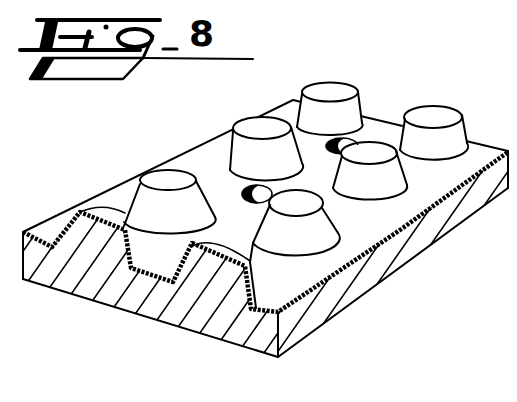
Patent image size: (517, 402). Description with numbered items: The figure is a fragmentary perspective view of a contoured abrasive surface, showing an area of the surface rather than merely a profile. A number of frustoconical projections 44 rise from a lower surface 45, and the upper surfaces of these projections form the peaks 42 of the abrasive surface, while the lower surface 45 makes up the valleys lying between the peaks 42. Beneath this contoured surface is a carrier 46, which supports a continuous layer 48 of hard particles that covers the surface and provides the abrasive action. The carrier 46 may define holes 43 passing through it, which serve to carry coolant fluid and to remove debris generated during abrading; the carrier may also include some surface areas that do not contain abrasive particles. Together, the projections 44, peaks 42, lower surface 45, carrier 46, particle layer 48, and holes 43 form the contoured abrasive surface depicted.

The peaks 42 is at (173, 185).
The holes 43 is at (243, 192).
The frustoconical projections 44 is at (133, 186).
The lower surface 45 is at (300, 282).
The carrier 46 is at (157, 300).
The continuous layer of hard particles 48 is at (60, 244).